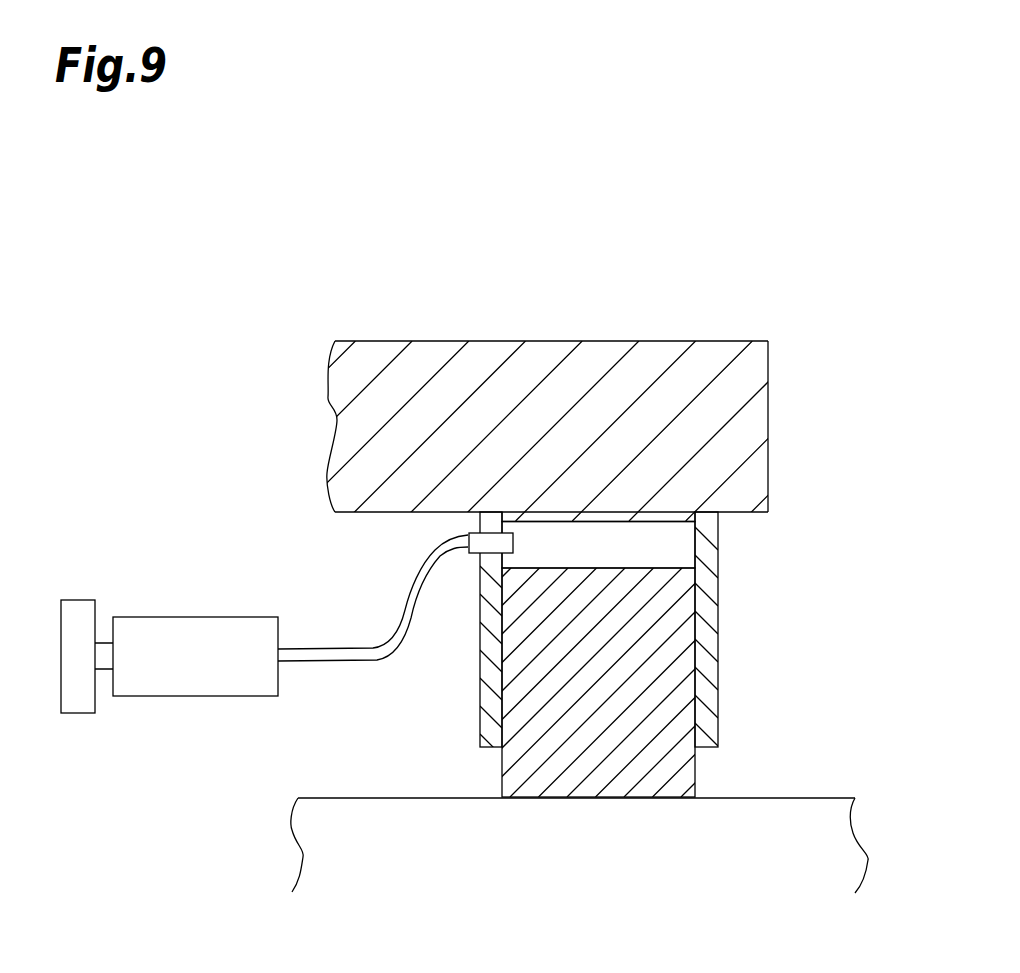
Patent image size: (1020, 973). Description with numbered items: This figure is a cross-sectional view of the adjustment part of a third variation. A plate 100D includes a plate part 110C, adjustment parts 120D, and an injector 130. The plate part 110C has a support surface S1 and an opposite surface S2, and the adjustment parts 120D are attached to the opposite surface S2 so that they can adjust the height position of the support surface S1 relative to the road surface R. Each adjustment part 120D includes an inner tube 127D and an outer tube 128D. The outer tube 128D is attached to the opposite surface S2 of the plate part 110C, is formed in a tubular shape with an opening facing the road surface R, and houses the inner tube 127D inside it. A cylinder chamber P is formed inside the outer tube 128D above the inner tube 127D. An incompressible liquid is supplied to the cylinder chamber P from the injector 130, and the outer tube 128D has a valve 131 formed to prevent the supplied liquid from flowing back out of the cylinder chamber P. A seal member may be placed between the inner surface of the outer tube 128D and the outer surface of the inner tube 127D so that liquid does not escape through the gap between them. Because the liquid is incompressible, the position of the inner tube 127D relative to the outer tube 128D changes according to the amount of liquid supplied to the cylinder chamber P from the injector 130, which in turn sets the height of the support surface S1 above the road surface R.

The plate 100D is at (521, 518).
The plate part 110C is at (455, 340).
The support surface S1 is at (375, 340).
The opposite surface S2 is at (392, 513).
The cylinder chamber P is at (657, 543).
The outer tube 128D is at (705, 545).
The adjustment part 120D is at (719, 628).
The inner tube 127D is at (670, 762).
The road surface R is at (822, 797).
The injector 130 is at (173, 617).
The valve 131 is at (473, 553).